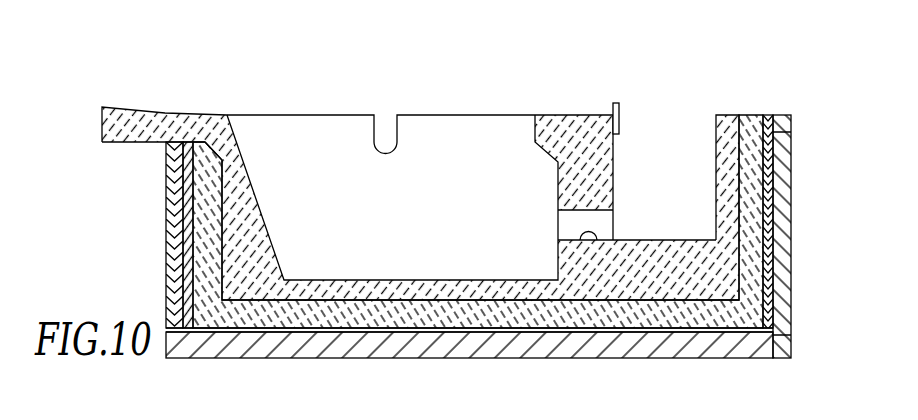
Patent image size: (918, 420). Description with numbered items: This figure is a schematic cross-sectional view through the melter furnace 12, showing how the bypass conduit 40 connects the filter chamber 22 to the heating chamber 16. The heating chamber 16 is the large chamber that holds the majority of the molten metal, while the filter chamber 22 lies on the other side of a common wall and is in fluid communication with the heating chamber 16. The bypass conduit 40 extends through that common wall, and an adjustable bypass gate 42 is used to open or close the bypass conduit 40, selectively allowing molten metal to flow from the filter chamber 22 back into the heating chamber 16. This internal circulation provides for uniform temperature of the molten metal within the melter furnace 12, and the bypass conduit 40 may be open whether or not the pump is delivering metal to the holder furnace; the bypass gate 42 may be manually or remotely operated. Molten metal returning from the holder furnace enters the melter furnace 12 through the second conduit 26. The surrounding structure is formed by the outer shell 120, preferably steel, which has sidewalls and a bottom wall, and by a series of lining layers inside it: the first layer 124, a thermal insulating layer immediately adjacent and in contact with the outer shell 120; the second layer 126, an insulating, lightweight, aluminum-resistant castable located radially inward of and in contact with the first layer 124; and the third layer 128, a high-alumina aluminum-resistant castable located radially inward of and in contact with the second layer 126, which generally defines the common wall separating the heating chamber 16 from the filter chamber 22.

The melter furnace 12 is at (222, 88).
The heating chamber 16 is at (432, 220).
The molten metal filter chamber 22 is at (715, 133).
The second conduit 26 is at (135, 108).
The bypass conduit 40 is at (584, 233).
The adjustable bypass gate 42 is at (622, 103).
The outer shell 120 is at (788, 143).
The first layer 124 is at (767, 216).
The second layer 126 is at (758, 260).
The third layer 128 is at (690, 258).